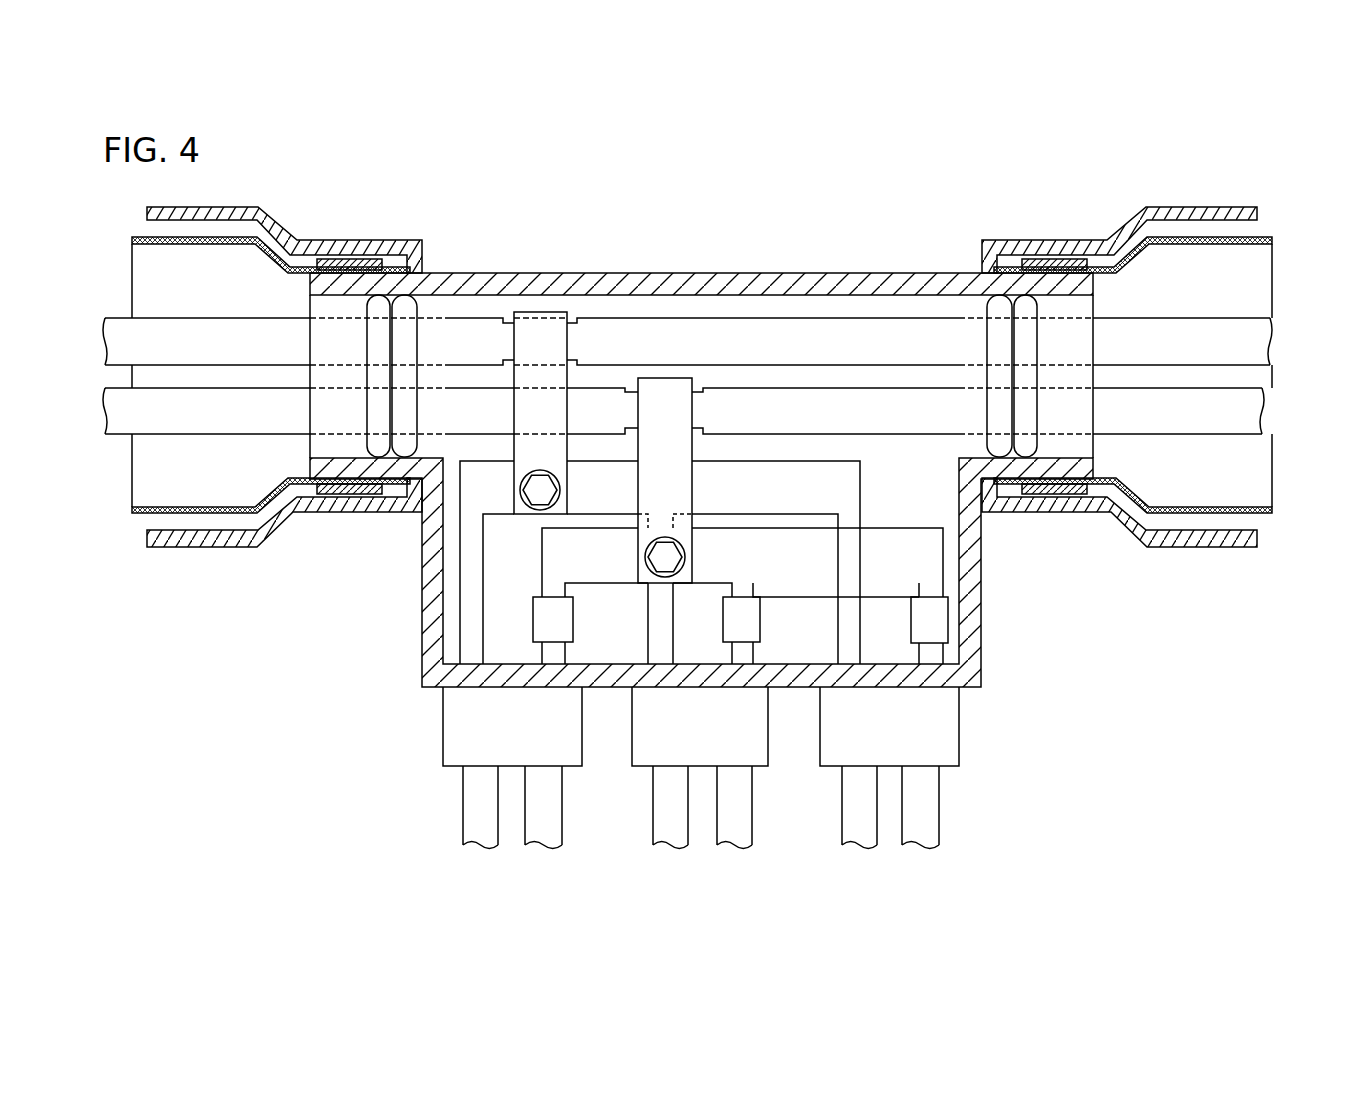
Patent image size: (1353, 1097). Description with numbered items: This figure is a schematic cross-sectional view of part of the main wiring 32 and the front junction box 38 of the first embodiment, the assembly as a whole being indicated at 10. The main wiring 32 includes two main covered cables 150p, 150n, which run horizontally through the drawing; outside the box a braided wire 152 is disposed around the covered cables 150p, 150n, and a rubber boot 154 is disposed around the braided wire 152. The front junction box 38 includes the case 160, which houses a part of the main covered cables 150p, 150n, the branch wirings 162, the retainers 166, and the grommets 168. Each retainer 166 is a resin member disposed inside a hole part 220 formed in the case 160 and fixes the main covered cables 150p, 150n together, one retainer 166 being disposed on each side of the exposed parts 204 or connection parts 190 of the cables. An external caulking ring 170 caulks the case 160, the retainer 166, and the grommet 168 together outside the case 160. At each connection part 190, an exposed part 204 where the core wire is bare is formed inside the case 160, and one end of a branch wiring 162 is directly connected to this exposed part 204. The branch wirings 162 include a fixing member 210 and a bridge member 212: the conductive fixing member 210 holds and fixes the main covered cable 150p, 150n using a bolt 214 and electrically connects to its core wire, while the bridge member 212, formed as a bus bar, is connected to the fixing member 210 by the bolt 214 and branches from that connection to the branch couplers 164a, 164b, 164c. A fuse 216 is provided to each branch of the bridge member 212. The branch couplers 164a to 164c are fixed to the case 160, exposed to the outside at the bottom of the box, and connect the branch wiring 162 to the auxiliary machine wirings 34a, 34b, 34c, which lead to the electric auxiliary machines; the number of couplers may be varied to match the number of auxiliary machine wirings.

The power conversion device 10 is at (332, 160).
The main wiring 32 is at (687, 356).
The auxiliary machine wiring 34a is at (757, 853).
The auxiliary machine wiring 34b is at (943, 853).
The auxiliary machine wiring 34c is at (567, 853).
The front junction box 38 is at (413, 634).
The main covered cable 150p is at (180, 352).
The main covered cable 150n is at (145, 470).
The braided wire 152 is at (198, 242).
The rubber boot 154 is at (218, 212).
The case 160 is at (867, 282).
The branch wiring 162 is at (592, 366).
The branch coupler 164a is at (758, 759).
The branch coupler 164b is at (946, 759).
The branch coupler 164c is at (570, 758).
The retainer 166 is at (320, 308).
The grommet 168 is at (377, 345).
The external caulking ring 170 is at (343, 258).
The connection part 190 is at (559, 366).
The exposed part 204 is at (559, 366).
The fixing member 210 is at (550, 317).
The bridge member 212 is at (602, 480).
The bolt 214 is at (540, 485).
The fuse 216 is at (565, 622).
The hole part 220 is at (699, 373).